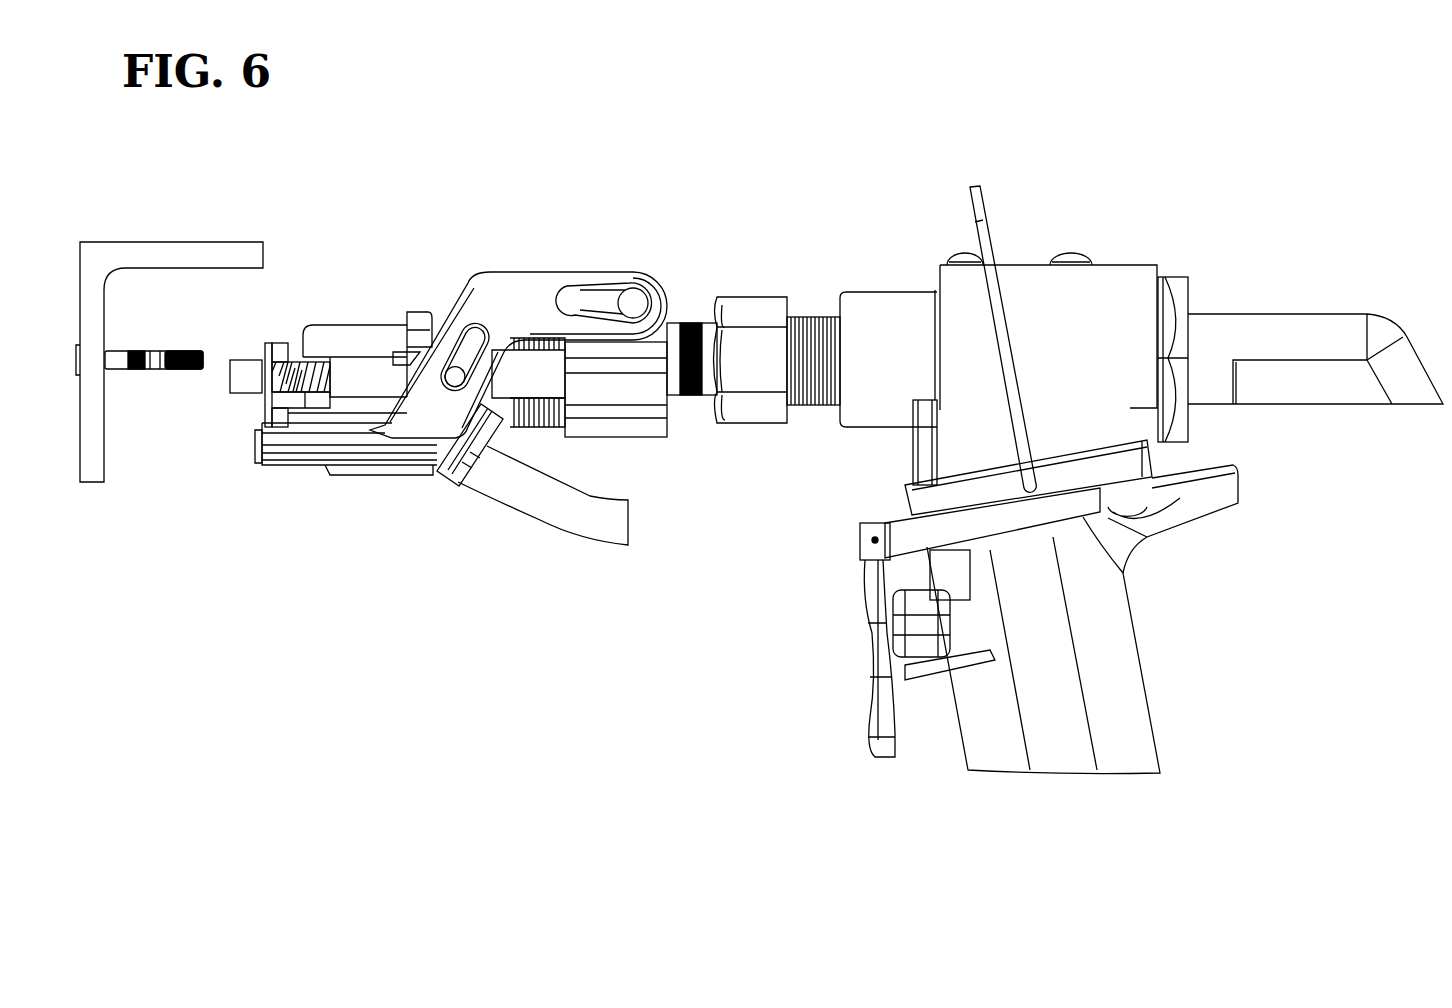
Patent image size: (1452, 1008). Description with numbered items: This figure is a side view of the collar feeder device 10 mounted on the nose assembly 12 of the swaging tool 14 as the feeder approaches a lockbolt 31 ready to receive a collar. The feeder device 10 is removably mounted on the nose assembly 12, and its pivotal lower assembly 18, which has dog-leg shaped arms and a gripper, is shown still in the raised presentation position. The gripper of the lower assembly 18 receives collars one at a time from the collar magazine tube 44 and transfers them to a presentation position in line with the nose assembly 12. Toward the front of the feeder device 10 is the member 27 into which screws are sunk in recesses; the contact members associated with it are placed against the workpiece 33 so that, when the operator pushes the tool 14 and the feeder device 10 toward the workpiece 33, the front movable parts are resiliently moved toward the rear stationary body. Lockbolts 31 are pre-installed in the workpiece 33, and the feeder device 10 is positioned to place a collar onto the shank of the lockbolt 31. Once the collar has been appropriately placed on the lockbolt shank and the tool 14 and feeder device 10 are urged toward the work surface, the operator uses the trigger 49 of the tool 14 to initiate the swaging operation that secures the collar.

The collar feeder device 10 is at (512, 270).
The nose assembly 12 is at (345, 325).
The swaging tool 14 is at (1145, 672).
The pivotal lower assembly 18 is at (300, 466).
The member 27 is at (243, 360).
The lockbolt 31 is at (158, 371).
The workpiece 33 is at (168, 242).
The collar magazine tube 44 is at (572, 540).
The trigger 49 is at (868, 633).